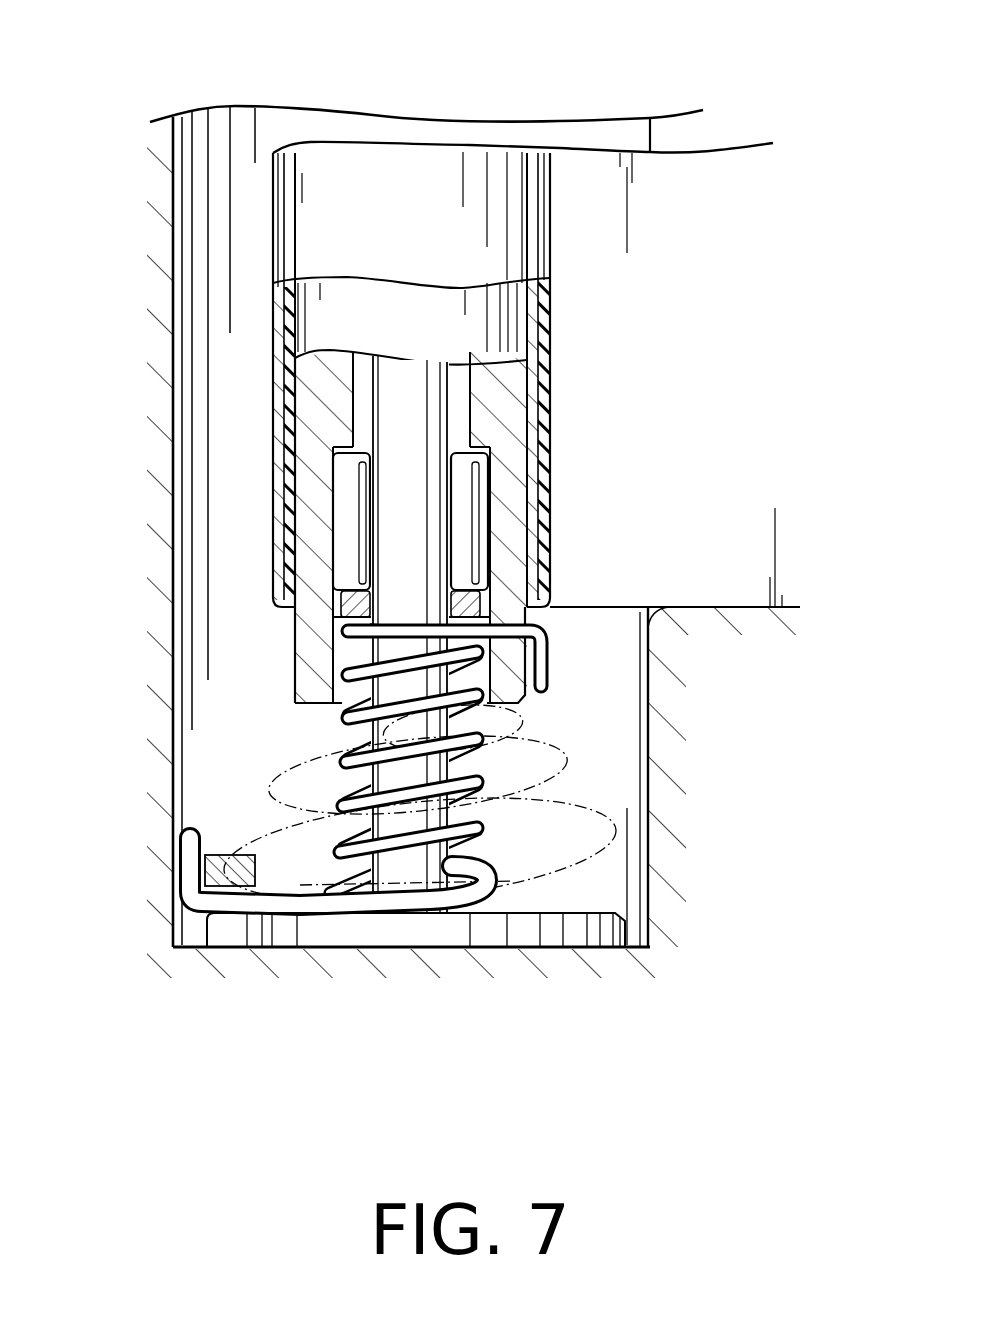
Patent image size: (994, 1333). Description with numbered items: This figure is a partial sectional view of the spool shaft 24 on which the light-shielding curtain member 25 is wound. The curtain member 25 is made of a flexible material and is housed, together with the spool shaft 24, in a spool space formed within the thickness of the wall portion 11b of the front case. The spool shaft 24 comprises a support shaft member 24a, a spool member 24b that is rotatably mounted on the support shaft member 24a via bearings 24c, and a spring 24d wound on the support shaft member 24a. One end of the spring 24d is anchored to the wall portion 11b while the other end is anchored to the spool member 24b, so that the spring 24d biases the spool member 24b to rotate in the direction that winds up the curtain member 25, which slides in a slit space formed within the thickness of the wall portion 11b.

The spool shaft 24 is at (524, 80).
The support shaft member 24a is at (527, 935).
The spool member 24b is at (500, 427).
The bearings 24c is at (470, 518).
The spring 24d is at (307, 890).
The light-shielding curtain member 25 is at (273, 500).
The wall portion 11b is at (468, 1047).